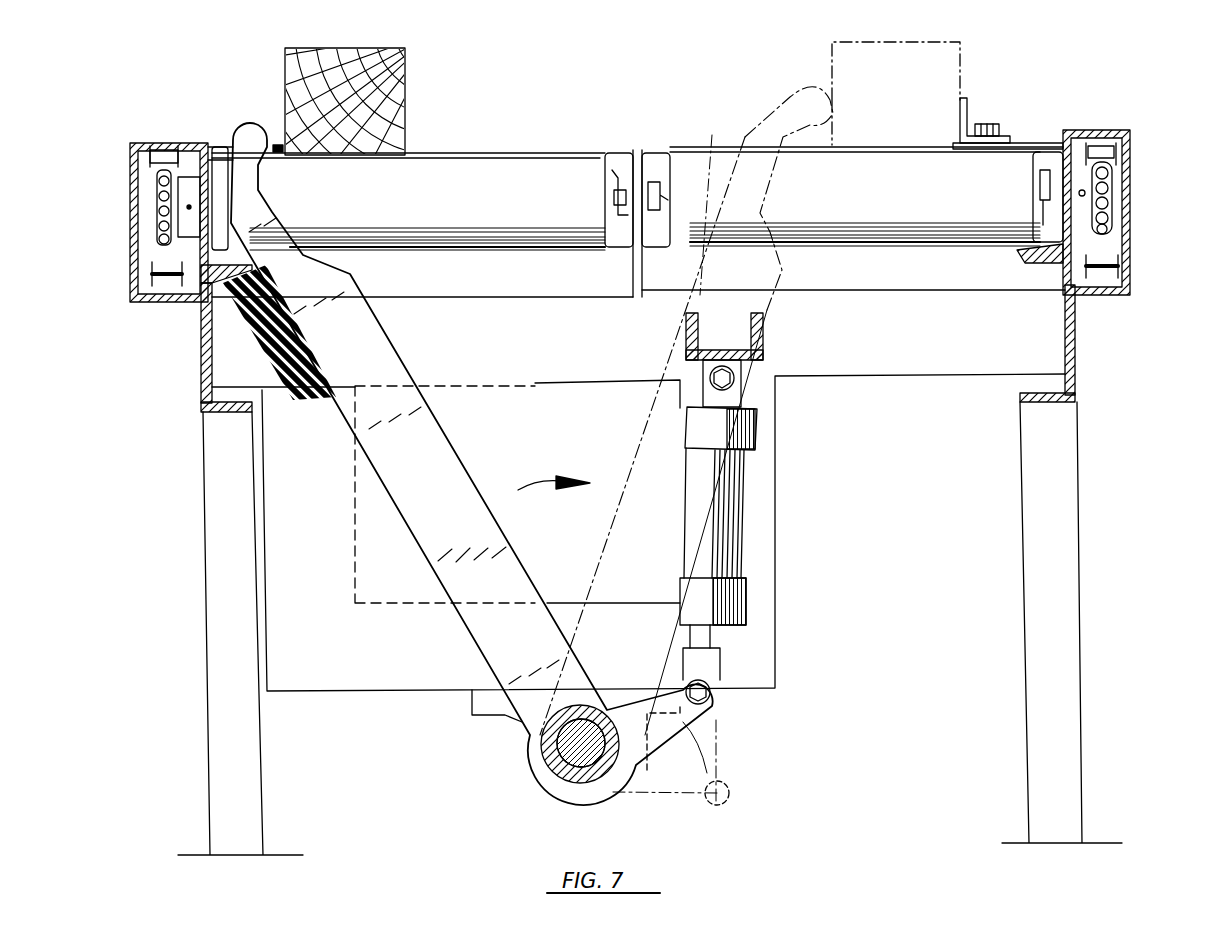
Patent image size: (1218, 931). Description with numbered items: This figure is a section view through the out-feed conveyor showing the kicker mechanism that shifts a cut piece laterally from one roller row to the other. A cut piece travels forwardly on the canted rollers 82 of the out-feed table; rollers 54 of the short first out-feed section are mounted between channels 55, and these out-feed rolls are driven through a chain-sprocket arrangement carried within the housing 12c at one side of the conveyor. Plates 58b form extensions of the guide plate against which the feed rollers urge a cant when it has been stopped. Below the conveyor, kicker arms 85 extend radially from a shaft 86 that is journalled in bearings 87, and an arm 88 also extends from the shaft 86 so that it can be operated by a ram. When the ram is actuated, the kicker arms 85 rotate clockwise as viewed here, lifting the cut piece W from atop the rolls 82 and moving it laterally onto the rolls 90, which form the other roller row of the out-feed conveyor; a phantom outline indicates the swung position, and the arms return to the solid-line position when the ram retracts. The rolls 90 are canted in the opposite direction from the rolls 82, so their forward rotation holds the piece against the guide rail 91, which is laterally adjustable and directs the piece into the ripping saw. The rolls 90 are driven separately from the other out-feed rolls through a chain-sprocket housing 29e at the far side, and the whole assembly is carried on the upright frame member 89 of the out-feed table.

The housing 12c is at (130, 222).
The chain-sprocket housing 29e is at (1130, 213).
The plate 58b is at (218, 143).
The workpiece (wood block) W is at (405, 63).
The roller 82 is at (494, 240).
The roll 90 is at (913, 222).
The guide rail 91 is at (962, 112).
The roller 54 is at (203, 353).
The right upright frame member 89 is at (1075, 340).
The channel 55 is at (206, 572).
The kicker arm 85 is at (455, 464).
The shaft 86 is at (556, 792).
The bearing 87 is at (520, 746).
The arm 88 is at (716, 728).